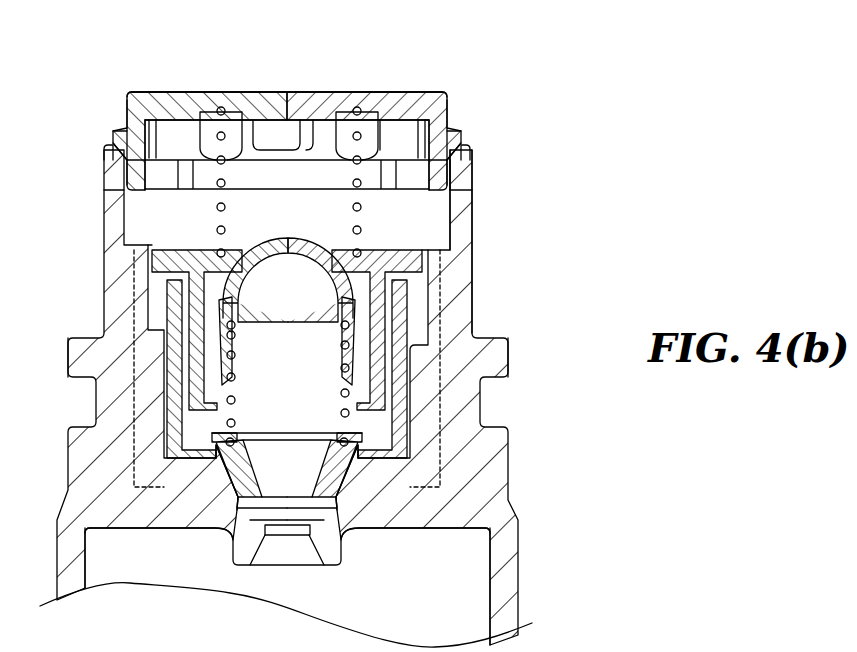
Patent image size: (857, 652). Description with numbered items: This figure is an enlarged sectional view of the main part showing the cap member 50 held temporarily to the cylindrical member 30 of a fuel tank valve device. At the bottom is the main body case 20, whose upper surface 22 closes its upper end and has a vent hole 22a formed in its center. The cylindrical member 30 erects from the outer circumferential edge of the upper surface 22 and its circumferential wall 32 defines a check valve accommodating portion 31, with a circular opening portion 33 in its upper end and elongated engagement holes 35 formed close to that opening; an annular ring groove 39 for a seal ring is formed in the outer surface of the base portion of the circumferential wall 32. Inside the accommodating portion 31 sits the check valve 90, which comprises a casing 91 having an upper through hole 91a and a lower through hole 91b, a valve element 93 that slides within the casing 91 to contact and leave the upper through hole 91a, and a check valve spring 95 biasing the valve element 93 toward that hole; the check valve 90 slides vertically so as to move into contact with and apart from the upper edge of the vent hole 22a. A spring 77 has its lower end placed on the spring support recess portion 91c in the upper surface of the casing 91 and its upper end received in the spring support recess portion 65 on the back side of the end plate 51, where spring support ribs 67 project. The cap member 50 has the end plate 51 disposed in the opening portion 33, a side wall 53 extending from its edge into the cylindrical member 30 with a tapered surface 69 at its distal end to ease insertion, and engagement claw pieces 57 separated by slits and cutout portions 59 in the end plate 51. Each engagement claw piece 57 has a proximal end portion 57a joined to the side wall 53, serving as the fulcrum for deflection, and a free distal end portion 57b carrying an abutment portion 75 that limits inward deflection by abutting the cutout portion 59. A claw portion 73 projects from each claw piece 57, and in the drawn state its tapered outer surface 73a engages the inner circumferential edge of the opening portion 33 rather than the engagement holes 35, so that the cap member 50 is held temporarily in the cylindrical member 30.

The main body case 20 is at (522, 573).
The upper surface 22 is at (444, 507).
The vent hole 22a is at (298, 555).
The cylindrical member 30 is at (490, 234).
The check valve accommodating portion 31 is at (383, 219).
The circumferential wall 32 is at (458, 256).
The opening portion 33 is at (470, 192).
The engagement hole 35 is at (465, 180).
The annular ring groove 39 is at (96, 405).
The cap member 50 is at (470, 88).
The end plate 51 is at (330, 100).
The side wall 53 is at (157, 186).
The engagement claw piece 57 is at (127, 110).
The proximal end portion 57a is at (104, 150).
The distal end portion 57b is at (152, 98).
The cutout portion 59 is at (163, 98).
The spring support recess portion 65 is at (347, 112).
The spring support rib 67 is at (240, 112).
The tapered surface 69 is at (127, 170).
The claw portion 73 is at (113, 136).
The outer surface 73a is at (472, 152).
The abutment portion 75 is at (155, 96).
The spring 77 is at (218, 230).
The check valve 90 is at (452, 227).
The casing 91 is at (417, 307).
The upper through hole 91a is at (318, 250).
The lower through hole 91b is at (276, 528).
The spring support recess portion 91c is at (380, 263).
The valve element 93 is at (262, 245).
The check valve spring 95 is at (345, 392).